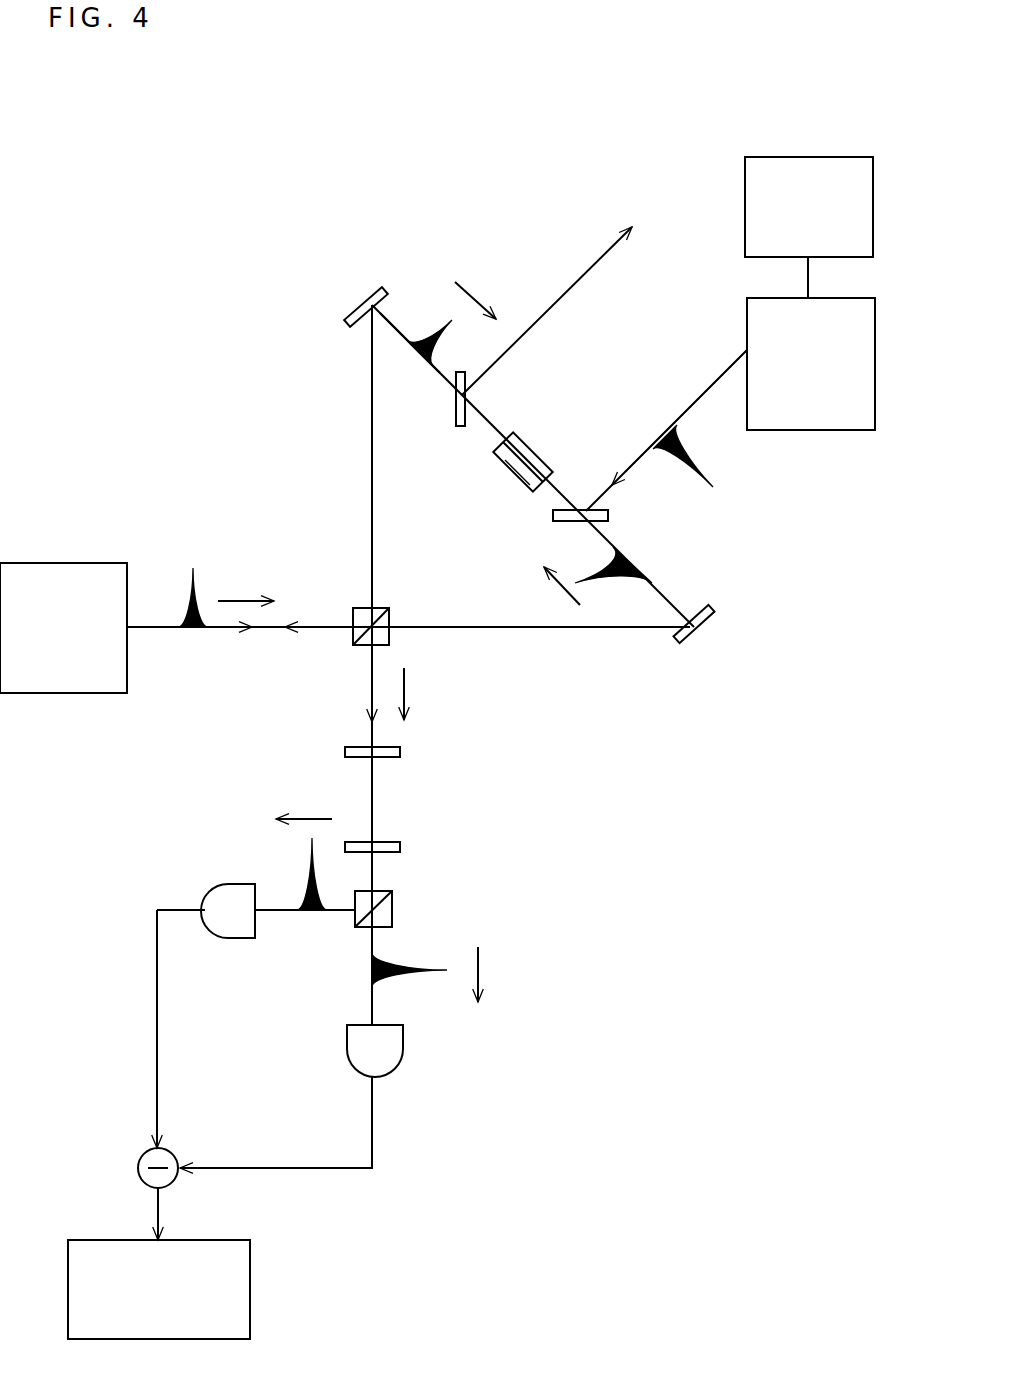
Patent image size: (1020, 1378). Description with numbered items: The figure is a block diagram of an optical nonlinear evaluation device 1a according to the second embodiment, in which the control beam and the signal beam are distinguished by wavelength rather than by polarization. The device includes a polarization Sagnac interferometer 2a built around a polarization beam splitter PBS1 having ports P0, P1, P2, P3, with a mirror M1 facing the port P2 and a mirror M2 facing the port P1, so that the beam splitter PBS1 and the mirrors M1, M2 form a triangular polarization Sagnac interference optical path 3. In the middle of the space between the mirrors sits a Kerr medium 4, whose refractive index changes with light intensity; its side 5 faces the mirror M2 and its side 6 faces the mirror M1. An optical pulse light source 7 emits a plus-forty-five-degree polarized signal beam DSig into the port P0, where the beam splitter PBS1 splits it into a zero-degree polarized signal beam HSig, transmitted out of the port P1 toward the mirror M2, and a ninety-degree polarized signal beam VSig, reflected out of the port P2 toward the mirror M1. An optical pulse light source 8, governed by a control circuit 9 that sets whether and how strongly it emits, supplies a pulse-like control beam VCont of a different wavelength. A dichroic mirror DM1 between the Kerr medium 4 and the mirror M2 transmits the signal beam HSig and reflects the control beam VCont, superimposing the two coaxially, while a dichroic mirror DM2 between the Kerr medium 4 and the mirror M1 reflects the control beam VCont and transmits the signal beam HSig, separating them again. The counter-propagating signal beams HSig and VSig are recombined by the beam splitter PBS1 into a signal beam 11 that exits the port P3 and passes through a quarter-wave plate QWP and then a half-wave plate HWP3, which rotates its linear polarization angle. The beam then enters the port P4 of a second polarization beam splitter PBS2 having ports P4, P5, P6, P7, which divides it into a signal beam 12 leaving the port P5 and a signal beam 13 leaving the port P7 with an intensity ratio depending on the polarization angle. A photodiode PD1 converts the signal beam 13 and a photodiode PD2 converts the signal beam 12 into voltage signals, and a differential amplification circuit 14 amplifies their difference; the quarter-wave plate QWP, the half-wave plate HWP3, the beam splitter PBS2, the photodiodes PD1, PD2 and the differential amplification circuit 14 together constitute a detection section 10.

The optical nonlinear evaluation device 1a is at (97, 178).
The polarization Sagnac interferometer 2a is at (480, 200).
The polarization Sagnac interference optical path 3 is at (397, 326).
The Kerr medium 4 is at (528, 438).
The side 5 is at (548, 476).
The side 6 is at (508, 437).
The optical pulse light source 7 is at (63, 563).
The optical pulse light source 8 is at (838, 298).
The control circuit 9 is at (838, 157).
The detection section 10 is at (533, 820).
The signal beam 11 is at (406, 690).
The signal beam 12 is at (480, 970).
The signal beam 13 is at (309, 818).
The differential amplification circuit 14 is at (251, 1287).
The mirror M1 is at (349, 304).
The mirror M2 is at (693, 643).
The dichroic mirror DM1 is at (553, 517).
The dichroic mirror DM2 is at (455, 420).
The polarization beam splitter PBS1 is at (390, 638).
The polarization beam splitter PBS2 is at (393, 914).
The quarter-wave plate QWP is at (401, 752).
The half-wave plate HWP3 is at (401, 848).
The photodiode PD1 is at (232, 884).
The photodiode PD2 is at (404, 1037).
The port P0 is at (353, 620).
The port P1 is at (388, 620).
The port P2 is at (372, 607).
The port P3 is at (360, 645).
The port P4 is at (380, 891).
The port P5 is at (385, 928).
The port P6 is at (392, 906).
The port P7 is at (355, 920).
The signal beam VSig is at (473, 297).
The control beam VCont is at (700, 364).
The signal beam HSig is at (557, 583).
The signal beam DSig is at (240, 600).